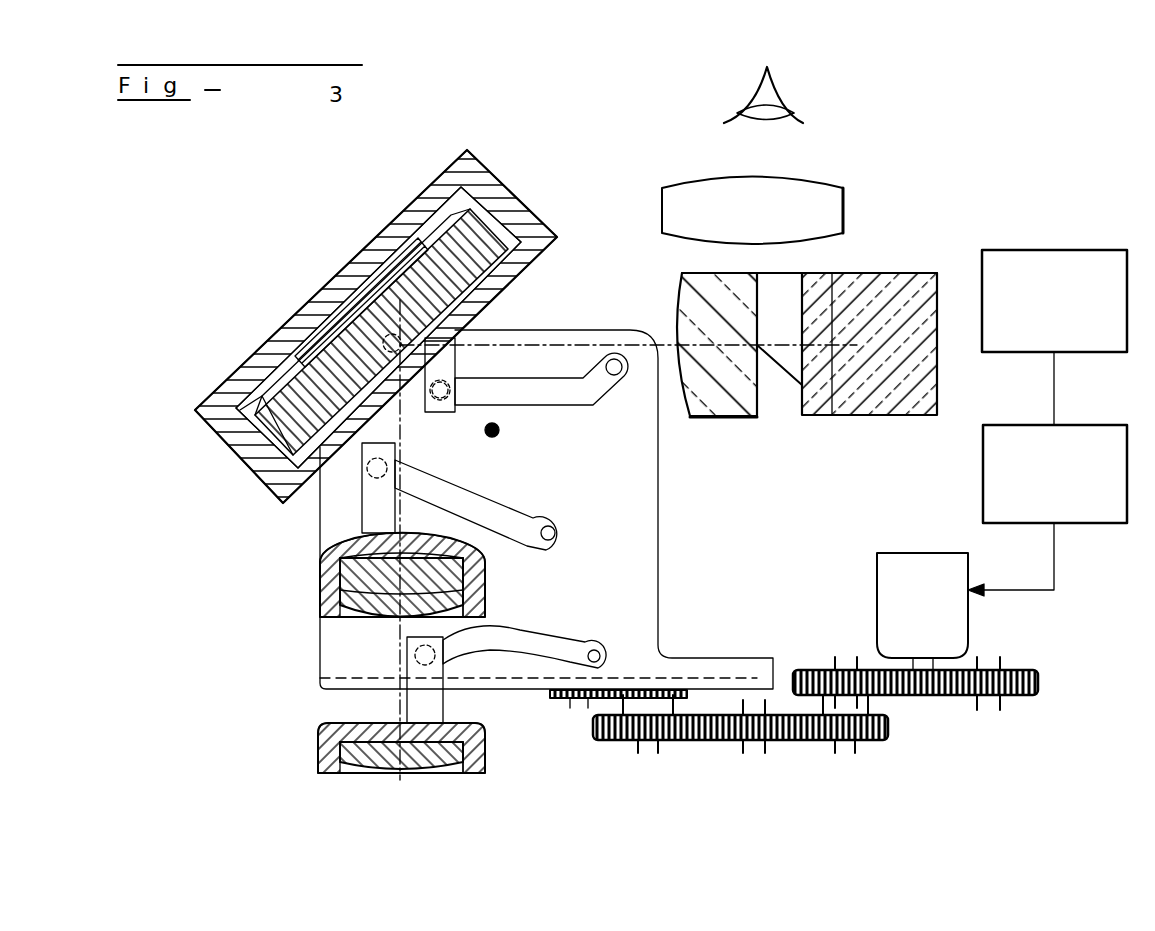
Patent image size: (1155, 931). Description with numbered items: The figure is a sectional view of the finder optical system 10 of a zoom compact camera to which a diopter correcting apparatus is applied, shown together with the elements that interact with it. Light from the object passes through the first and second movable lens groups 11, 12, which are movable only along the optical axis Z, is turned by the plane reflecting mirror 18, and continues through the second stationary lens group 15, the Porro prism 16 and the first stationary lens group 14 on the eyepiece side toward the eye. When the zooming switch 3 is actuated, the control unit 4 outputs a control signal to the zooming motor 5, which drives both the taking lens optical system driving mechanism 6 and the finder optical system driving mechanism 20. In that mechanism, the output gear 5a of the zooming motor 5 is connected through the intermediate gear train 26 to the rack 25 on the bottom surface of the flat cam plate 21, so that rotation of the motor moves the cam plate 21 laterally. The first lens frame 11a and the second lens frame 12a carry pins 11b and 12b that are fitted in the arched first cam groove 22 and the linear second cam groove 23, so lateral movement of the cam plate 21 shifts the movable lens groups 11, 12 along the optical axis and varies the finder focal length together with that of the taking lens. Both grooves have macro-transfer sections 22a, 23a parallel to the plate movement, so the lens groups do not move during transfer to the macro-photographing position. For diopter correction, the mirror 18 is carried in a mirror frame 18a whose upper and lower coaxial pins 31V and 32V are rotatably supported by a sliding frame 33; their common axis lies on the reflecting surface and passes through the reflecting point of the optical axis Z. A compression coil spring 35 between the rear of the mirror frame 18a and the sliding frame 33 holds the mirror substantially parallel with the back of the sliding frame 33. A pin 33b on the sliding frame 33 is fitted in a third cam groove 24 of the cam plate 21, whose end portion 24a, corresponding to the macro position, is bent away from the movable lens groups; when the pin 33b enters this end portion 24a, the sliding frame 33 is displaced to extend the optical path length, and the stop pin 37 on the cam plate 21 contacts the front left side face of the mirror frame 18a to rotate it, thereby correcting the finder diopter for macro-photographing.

The zooming switch 3 is at (1017, 250).
The control unit 4 is at (983, 450).
The zooming motor 5 is at (900, 555).
The output gear 5a is at (905, 695).
The taking lens optical system driving mechanism 6 is at (1038, 672).
The finder optical system 10 is at (589, 165).
The first movable lens group 11 is at (438, 757).
The first lens frame 11a is at (320, 742).
The pin 11b is at (407, 657).
The second movable lens group 12 is at (347, 627).
The second lens frame 12a is at (320, 568).
The pin 12b is at (360, 478).
The first stationary lens group 14 is at (843, 210).
The second stationary lens group 15 is at (740, 415).
The Porro prism 16 is at (885, 277).
The plane reflecting mirror 18 is at (450, 270).
The mirror frame 18a is at (280, 407).
The finder optical system driving mechanism 20 is at (560, 720).
The cam plate 21 is at (658, 590).
The first cam groove 22 is at (503, 632).
The macro-transfer section 22a is at (606, 659).
The second cam groove 23 is at (473, 497).
The macro-transfer section 23a is at (560, 532).
The third cam groove 24 is at (558, 397).
The end portion 24a is at (614, 366).
The rack 25 is at (513, 683).
The intermediate gear train 26 is at (690, 748).
The upper coaxial pin 31V is at (475, 318).
The lower coaxial pin 32V is at (528, 335).
The sliding frame 33 is at (388, 228).
The pin 33b is at (458, 370).
The compression coil spring 35 is at (330, 313).
The stop pin 37 is at (499, 430).
The optical axis Z is at (660, 345).